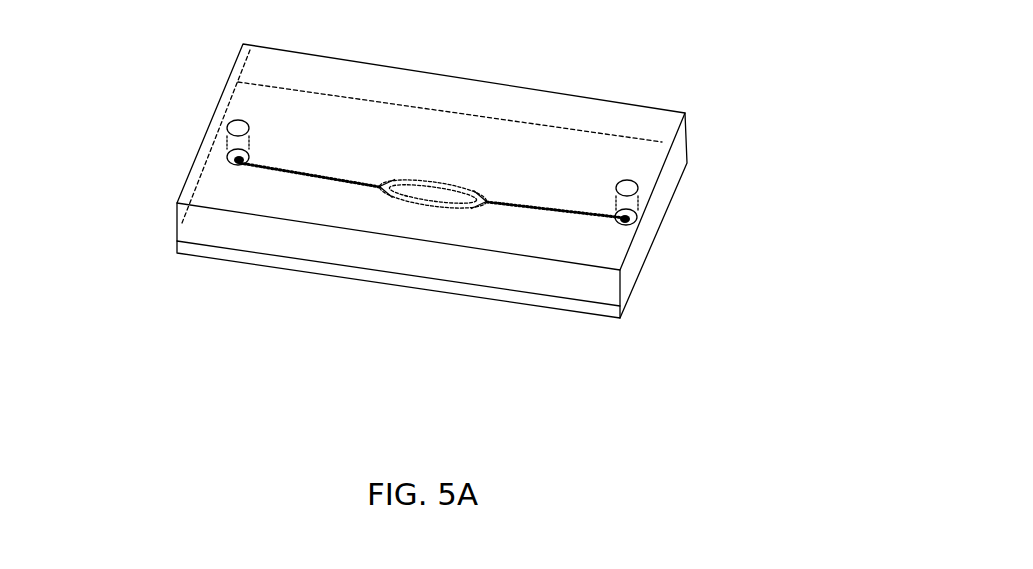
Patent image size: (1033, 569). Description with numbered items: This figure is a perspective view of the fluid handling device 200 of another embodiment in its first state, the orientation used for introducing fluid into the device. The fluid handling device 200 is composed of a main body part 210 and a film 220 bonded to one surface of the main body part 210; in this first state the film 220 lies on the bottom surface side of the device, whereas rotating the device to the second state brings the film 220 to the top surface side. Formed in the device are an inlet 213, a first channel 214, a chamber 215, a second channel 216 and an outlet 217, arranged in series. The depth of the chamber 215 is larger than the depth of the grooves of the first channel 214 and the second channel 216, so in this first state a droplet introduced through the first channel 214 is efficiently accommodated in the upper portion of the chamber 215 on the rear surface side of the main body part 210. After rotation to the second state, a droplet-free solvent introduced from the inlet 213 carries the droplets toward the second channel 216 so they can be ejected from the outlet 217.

The fluid handling device 200 is at (424, 161).
The main body part 210 is at (660, 128).
The inlet 213 is at (230, 129).
The first channel 214 is at (317, 180).
The chamber 215 is at (435, 210).
The second channel 216 is at (547, 213).
The outlet 217 is at (650, 212).
The film 220 is at (175, 243).